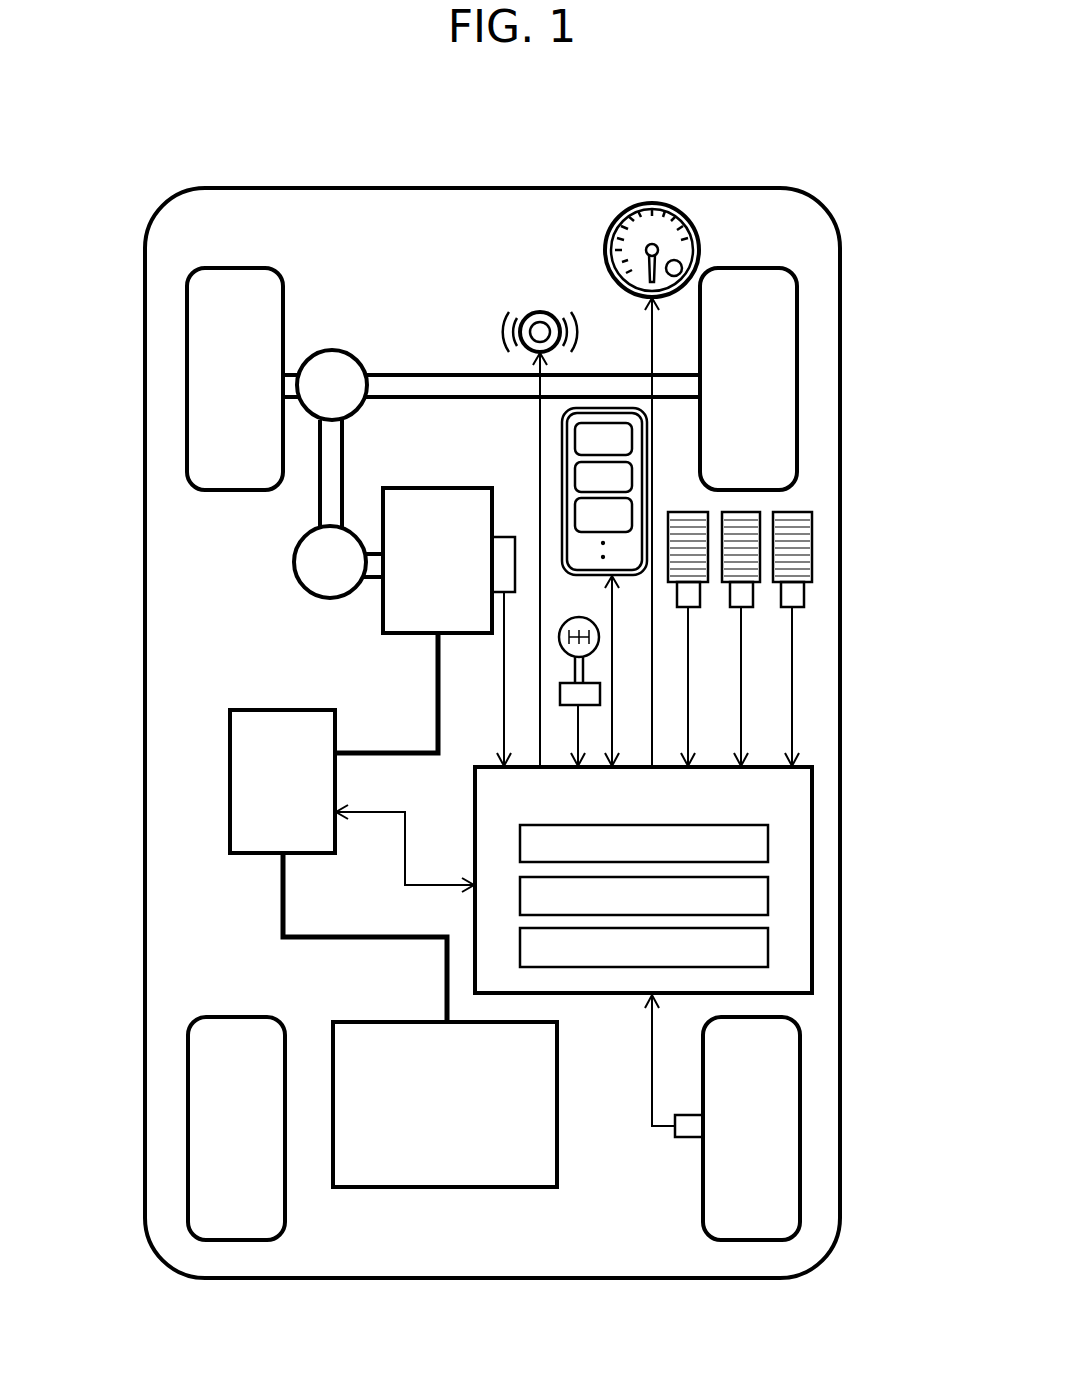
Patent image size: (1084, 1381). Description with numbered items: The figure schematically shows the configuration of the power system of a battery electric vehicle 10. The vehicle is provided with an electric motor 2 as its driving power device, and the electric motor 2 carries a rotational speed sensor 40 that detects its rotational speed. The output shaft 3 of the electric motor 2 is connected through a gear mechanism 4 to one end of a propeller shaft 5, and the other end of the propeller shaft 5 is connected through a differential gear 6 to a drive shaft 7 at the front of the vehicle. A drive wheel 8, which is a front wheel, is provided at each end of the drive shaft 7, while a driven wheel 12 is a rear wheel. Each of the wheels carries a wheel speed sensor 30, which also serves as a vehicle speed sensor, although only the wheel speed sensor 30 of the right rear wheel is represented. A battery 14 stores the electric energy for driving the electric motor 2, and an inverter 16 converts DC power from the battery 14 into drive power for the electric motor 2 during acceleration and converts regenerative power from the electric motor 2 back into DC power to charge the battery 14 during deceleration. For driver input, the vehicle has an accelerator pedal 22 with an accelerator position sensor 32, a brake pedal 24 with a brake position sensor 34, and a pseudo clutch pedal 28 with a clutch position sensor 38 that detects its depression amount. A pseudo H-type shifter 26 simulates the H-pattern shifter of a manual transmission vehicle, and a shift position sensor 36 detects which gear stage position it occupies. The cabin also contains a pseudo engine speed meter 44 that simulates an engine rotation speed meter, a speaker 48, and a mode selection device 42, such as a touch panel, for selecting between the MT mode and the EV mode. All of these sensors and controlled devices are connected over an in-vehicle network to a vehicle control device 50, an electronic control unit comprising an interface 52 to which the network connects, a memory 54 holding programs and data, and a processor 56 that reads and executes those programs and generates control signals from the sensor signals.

The battery electric vehicle 10 is at (822, 187).
The drive wheel 8 is at (187, 328).
The driven wheel 12 is at (188, 1097).
The drive shaft 7 is at (388, 375).
The differential gear 6 is at (338, 350).
The propeller shaft 5 is at (320, 513).
The gear mechanism 4 is at (296, 550).
The output shaft 3 is at (378, 582).
The electric motor 2 is at (388, 635).
The rotational speed sensor 40 is at (503, 537).
The inverter 16 is at (230, 780).
The battery 14 is at (500, 1187).
The vehicle control device 50 is at (704, 880).
The interface 52 is at (768, 847).
The memory 54 is at (768, 900).
The processor 56 is at (768, 947).
The mode selection device 42 is at (612, 408).
The pseudo engine speed meter 44 is at (655, 203).
The speaker 48 is at (540, 312).
The pseudo clutch pedal 28 is at (690, 512).
The brake pedal 24 is at (757, 512).
The accelerator pedal 22 is at (813, 530).
The clutch position sensor 38 is at (693, 607).
The brake position sensor 34 is at (753, 607).
The accelerator position sensor 32 is at (805, 597).
The pseudo H-type shifter 26 is at (598, 645).
The shift position sensor 36 is at (600, 700).
The wheel speed sensor 30 is at (683, 1137).